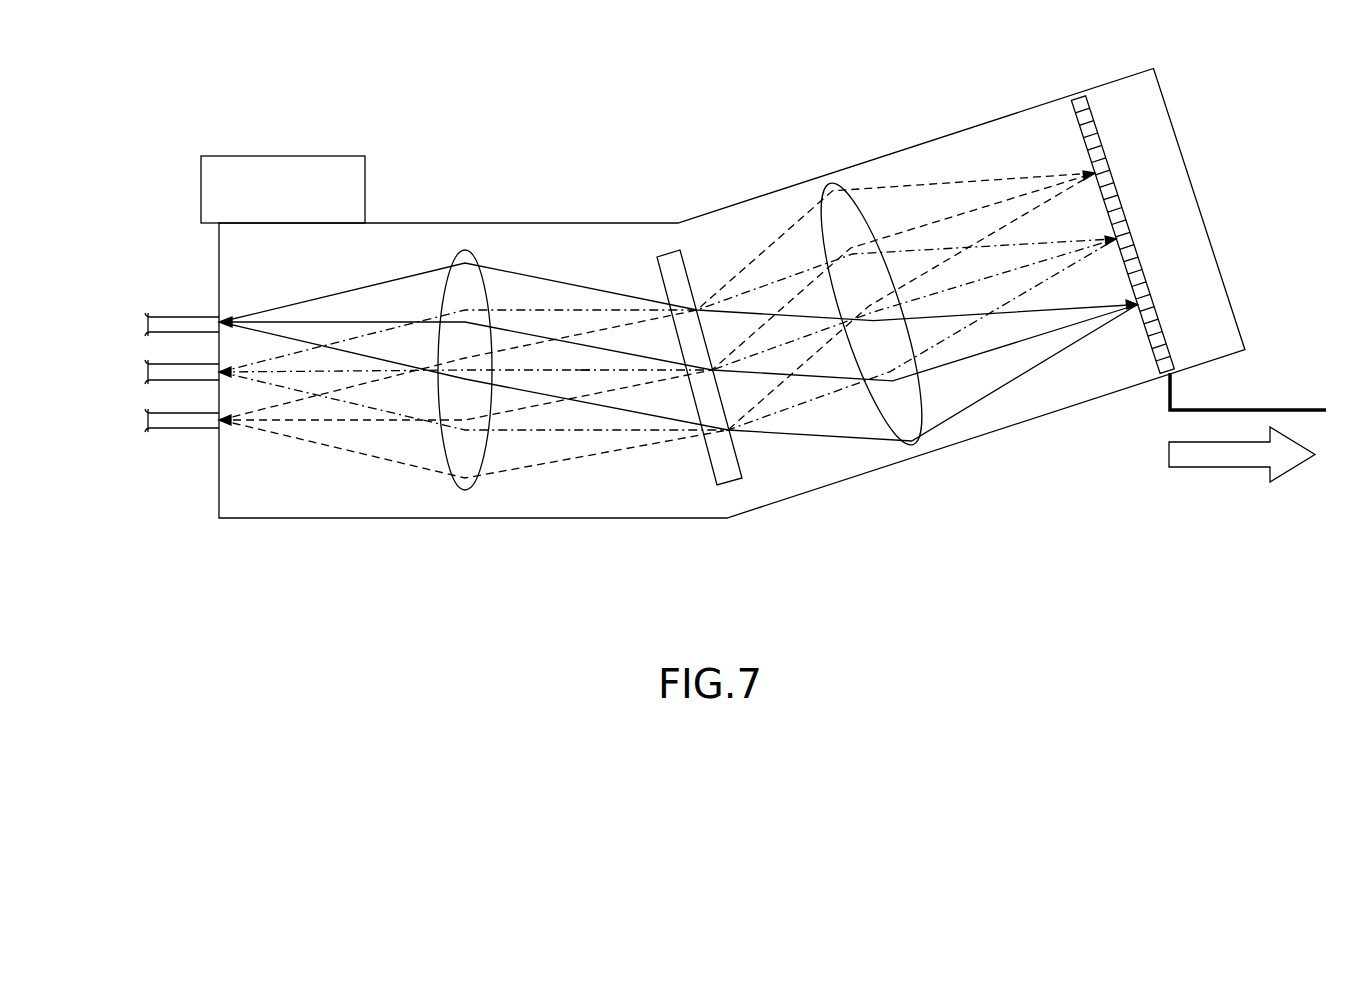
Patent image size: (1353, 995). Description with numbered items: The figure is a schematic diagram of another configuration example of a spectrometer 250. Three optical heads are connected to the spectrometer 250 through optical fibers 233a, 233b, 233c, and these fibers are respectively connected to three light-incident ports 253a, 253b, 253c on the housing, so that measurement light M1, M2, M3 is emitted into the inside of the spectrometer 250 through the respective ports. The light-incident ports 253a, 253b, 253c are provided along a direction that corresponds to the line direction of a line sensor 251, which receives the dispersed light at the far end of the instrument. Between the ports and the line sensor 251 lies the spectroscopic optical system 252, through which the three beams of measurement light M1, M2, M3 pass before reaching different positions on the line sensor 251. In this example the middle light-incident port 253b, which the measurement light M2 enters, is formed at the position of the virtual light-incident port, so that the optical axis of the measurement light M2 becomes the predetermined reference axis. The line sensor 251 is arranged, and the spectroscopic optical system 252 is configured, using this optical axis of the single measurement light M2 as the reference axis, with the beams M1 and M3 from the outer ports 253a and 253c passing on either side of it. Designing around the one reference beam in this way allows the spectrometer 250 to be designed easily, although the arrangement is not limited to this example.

The spectrometer 250 is at (716, 166).
The line sensor 251 is at (1077, 97).
The spectroscopic optical system 252 is at (605, 273).
The optical fiber 233a is at (152, 316).
The optical fiber 233b is at (172, 382).
The optical fiber 233c is at (162, 432).
The light-incident port 253a is at (219, 320).
The light-incident port 253b is at (219, 371).
The light-incident port 253c is at (219, 424).
The measurement light M1 is at (440, 268).
The measurement light M2 is at (343, 400).
The measurement light M3 is at (398, 468).